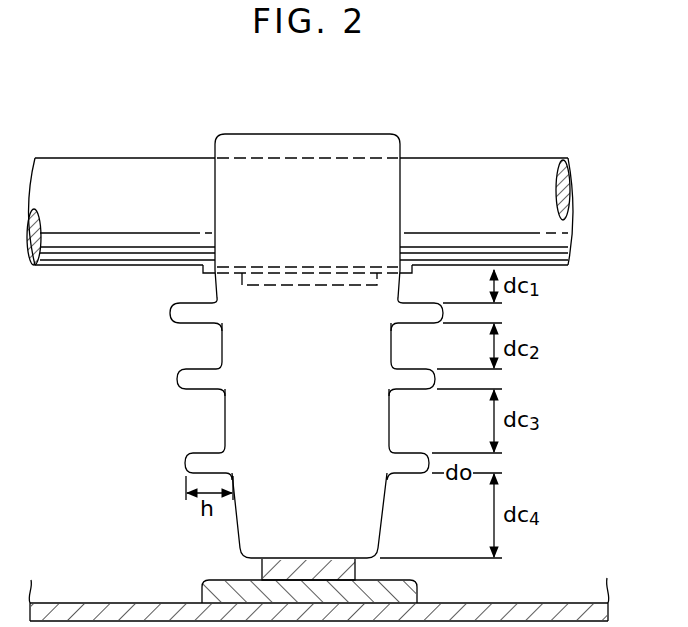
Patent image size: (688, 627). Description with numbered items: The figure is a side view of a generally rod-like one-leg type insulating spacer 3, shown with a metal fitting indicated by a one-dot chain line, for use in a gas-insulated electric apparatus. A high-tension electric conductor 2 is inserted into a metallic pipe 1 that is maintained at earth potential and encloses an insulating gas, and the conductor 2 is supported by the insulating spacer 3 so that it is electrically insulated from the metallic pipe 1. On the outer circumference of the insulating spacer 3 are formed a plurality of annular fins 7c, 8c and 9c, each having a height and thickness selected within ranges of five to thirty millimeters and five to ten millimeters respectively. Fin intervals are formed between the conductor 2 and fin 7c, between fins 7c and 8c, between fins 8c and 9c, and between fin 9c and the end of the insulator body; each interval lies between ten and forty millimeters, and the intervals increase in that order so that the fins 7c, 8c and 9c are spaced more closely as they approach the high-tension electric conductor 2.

The metallic pipe 1 is at (75, 603).
The high-tension electric conductor 2 is at (75, 158).
The insulating spacer 3 is at (218, 418).
The annular fin 7c is at (172, 313).
The annular fin 8c is at (178, 380).
The annular fin 9c is at (186, 465).